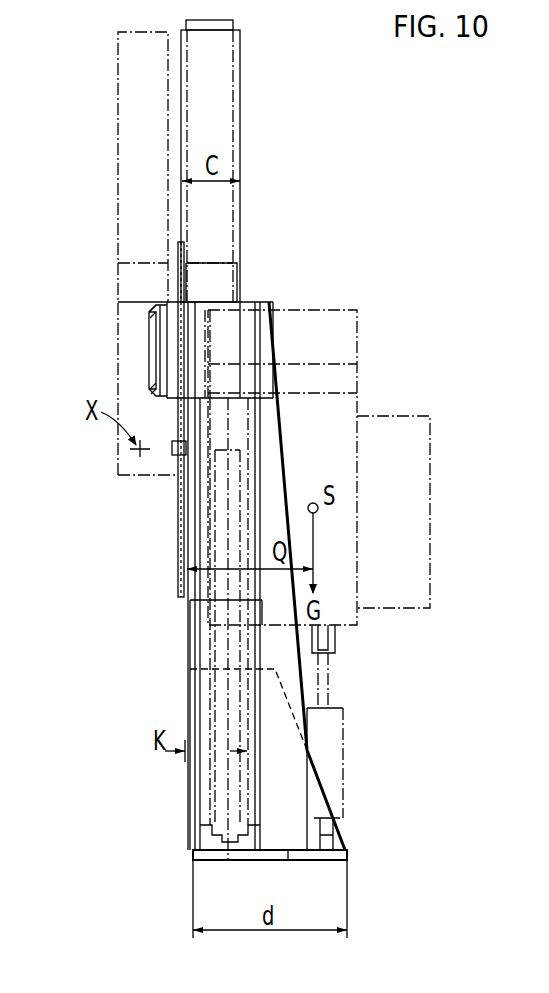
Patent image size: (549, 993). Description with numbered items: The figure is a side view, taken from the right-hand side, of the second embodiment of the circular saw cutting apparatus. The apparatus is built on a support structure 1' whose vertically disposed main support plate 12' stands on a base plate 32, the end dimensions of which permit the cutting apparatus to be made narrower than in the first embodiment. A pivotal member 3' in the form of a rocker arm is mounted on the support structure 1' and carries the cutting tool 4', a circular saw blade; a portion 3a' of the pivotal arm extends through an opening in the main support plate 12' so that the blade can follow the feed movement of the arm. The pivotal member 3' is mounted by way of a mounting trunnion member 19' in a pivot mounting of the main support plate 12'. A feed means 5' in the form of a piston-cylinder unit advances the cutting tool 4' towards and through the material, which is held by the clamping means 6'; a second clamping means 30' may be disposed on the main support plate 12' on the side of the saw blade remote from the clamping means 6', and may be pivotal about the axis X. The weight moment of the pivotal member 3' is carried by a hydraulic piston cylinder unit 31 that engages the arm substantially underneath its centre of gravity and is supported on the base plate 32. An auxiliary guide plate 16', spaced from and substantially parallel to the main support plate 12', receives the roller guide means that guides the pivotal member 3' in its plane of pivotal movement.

The second clamping means 30' is at (98, 253).
The clamping means 6' is at (268, 161).
The auxiliary guide plate 16' is at (303, 551).
The mounting trunnion member 19' is at (113, 350).
The pivotal member 3' is at (319, 467).
The portion of the pivotal arm 3a' is at (132, 472).
The cutting tool 4' is at (148, 419).
The main support plate 12' is at (211, 723).
The support structure 1' is at (151, 576).
The hydraulic piston cylinder unit 31 is at (340, 716).
The feed means 5' is at (195, 581).
The base plate 32 is at (198, 858).